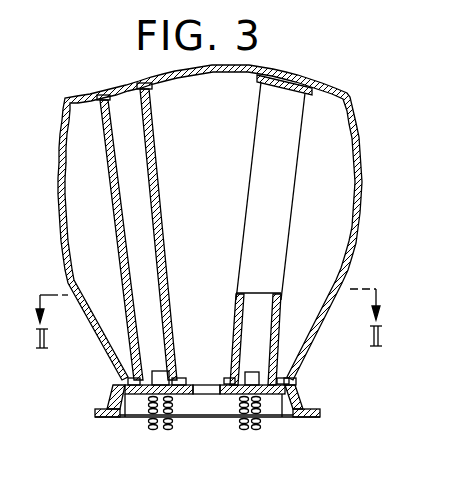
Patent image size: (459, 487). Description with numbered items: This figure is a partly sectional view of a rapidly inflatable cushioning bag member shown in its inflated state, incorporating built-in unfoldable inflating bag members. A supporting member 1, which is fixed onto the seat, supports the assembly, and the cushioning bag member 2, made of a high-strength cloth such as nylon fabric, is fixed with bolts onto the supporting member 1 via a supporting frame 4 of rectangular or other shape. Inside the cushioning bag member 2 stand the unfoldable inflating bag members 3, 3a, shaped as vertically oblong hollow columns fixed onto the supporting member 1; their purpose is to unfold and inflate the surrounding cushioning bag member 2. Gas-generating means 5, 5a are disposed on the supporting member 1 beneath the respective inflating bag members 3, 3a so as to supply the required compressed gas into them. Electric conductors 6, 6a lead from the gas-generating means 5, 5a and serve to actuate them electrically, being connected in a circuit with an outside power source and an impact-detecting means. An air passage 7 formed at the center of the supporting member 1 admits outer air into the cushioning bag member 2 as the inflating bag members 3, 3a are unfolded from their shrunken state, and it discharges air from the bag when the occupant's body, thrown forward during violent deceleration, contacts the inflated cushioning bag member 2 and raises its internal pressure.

The supporting member 1 is at (296, 394).
The bag member 2 is at (355, 113).
The unfoldable inflating bag member 3 is at (293, 172).
The unfoldable inflating bag member 3a is at (156, 177).
The supporting frame 4 is at (279, 402).
The gas-generating means 5 is at (252, 372).
The gas-generating means 5a is at (167, 372).
The electric conductor 6 is at (246, 432).
The electric conductor 6a is at (157, 435).
The air passage 7 is at (207, 395).